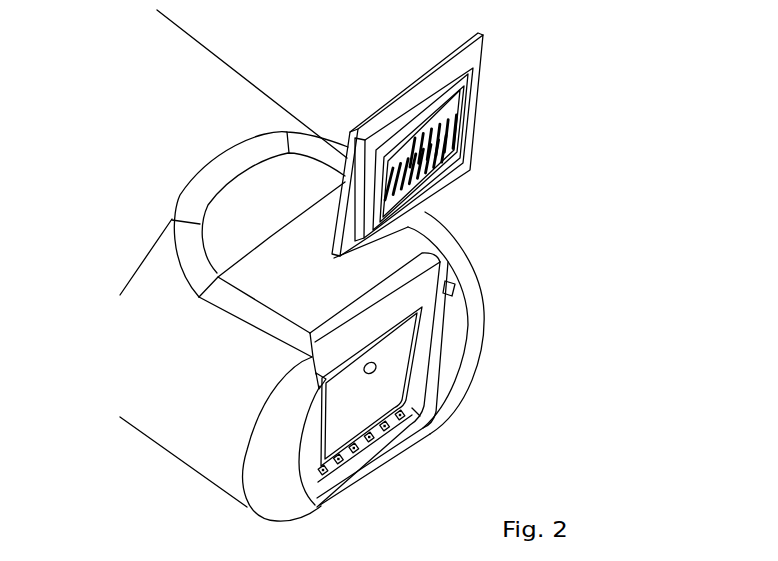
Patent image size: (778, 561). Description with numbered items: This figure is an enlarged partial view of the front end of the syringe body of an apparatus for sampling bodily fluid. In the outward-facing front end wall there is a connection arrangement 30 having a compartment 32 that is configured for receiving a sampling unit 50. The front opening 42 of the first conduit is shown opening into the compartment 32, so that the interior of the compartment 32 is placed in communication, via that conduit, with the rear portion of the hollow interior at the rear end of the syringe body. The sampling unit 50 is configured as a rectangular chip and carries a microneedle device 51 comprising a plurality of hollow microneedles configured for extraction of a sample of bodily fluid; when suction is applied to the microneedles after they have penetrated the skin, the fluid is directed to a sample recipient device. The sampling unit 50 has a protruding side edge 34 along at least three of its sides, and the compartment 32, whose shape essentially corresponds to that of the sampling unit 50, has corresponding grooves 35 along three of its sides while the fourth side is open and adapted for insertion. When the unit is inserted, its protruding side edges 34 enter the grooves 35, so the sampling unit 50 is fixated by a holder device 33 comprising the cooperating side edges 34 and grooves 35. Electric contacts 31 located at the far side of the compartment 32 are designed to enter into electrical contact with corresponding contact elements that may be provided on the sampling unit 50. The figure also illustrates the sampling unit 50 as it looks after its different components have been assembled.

The connection arrangement 30 is at (462, 408).
The electric contacts 31 is at (340, 463).
The compartment 32 is at (395, 385).
The holder device 33 is at (440, 330).
The protruding side edge 34 is at (481, 56).
The grooves 35 is at (316, 378).
The front opening 42 is at (376, 363).
The sampling unit 50 is at (429, 157).
The microneedle device 51 is at (451, 152).